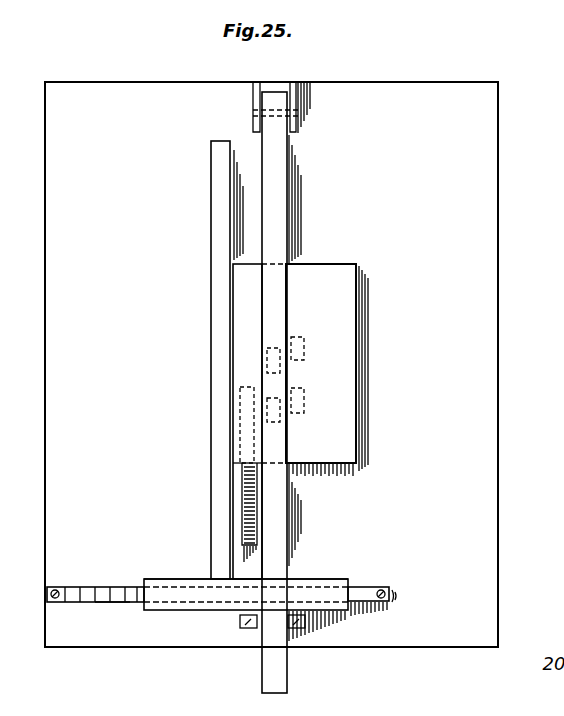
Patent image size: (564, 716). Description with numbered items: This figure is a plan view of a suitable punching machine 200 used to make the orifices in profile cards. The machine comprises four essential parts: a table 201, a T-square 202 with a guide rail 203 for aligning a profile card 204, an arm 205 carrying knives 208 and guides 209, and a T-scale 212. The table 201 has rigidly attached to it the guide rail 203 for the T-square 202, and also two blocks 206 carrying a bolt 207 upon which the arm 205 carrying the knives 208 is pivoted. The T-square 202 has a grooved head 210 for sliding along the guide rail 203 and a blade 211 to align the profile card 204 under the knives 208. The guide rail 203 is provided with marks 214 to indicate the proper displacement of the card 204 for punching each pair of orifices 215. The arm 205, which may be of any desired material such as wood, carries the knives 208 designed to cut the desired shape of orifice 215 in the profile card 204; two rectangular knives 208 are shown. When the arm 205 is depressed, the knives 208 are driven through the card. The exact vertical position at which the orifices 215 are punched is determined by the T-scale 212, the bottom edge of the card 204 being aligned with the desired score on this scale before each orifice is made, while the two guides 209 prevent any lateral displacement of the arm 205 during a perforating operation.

The punching machine 200 is at (500, 211).
The table 201 is at (482, 291).
The T-square 202 is at (193, 612).
The guide rail 203 is at (115, 596).
The profile card 204 is at (346, 338).
The arm 205 is at (280, 248).
The blocks 206 is at (260, 80).
The bolt 207 is at (299, 114).
The knives 208 is at (271, 398).
The guides 209 is at (292, 626).
The grooved head 210 is at (178, 581).
The blade 211 is at (211, 179).
The T-scale 212 is at (250, 486).
The marks 214 is at (124, 604).
The orifices 215 is at (298, 403).